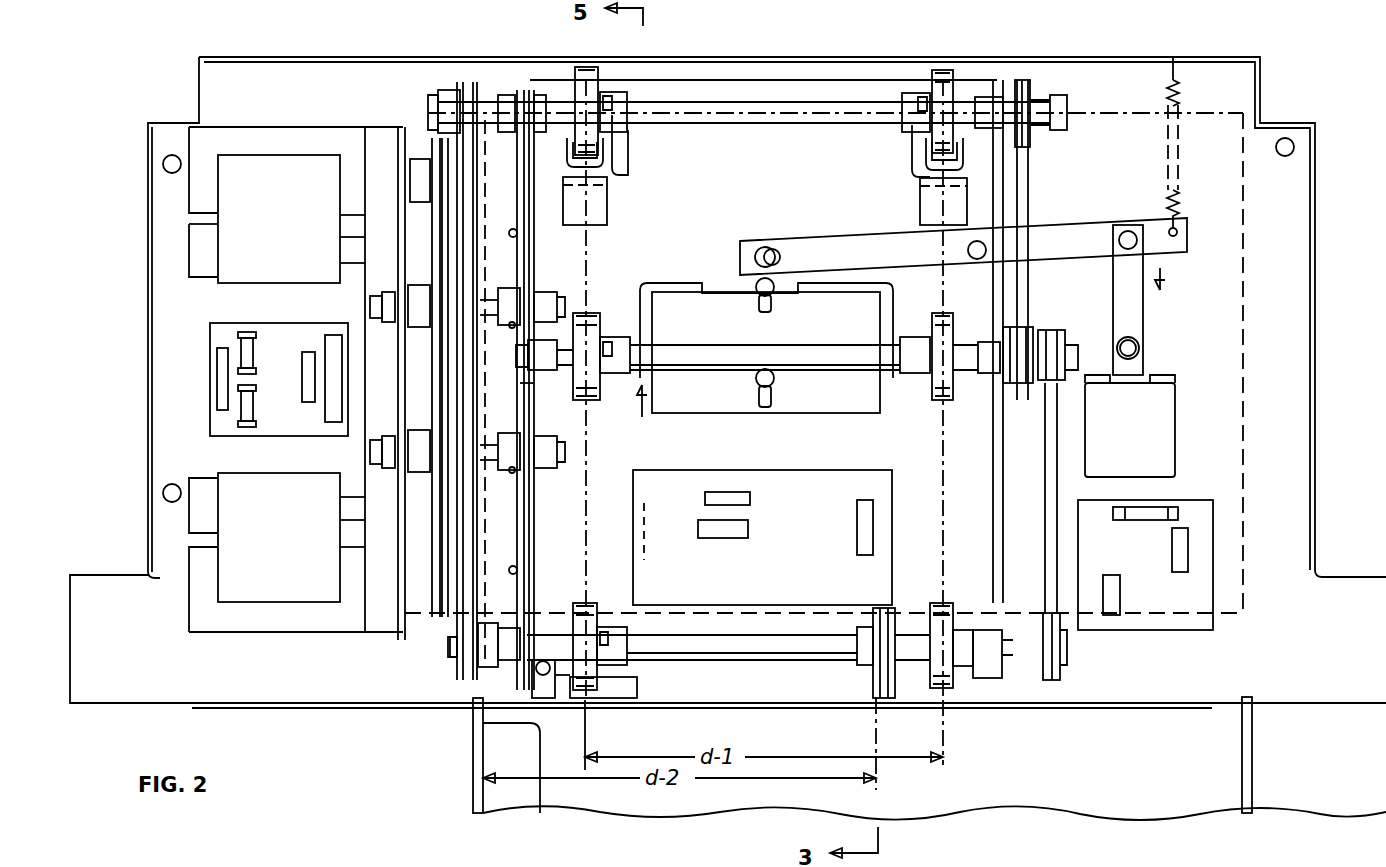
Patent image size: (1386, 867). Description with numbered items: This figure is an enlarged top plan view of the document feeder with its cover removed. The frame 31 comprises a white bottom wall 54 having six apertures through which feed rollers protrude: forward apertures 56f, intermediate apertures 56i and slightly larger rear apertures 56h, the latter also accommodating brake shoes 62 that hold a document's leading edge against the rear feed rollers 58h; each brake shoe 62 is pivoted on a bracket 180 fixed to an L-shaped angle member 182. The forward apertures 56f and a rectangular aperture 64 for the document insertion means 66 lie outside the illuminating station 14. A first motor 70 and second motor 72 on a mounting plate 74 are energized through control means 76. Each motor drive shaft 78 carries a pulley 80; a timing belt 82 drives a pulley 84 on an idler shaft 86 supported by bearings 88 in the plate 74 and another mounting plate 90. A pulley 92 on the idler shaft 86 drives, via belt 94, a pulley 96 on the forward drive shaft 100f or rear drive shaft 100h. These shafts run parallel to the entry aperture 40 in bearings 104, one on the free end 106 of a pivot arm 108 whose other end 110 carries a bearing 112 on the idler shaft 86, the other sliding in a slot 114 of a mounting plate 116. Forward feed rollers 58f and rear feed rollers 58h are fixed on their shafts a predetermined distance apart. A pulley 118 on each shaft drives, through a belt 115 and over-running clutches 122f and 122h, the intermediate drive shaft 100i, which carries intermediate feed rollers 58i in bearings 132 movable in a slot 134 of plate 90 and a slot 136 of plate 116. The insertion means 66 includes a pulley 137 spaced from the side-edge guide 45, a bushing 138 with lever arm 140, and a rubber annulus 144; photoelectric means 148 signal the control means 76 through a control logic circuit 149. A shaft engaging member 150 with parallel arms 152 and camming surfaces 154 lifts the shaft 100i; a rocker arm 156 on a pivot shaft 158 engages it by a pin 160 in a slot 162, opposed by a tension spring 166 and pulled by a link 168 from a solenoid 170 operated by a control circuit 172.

The illuminating station 14 is at (684, 108).
The frame 31 is at (196, 86).
The entry aperture 40 is at (778, 715).
The document side-edge guide 45 is at (473, 745).
The bottom wall 54 is at (322, 97).
The rear aperture 56h is at (604, 75).
The intermediate aperture 56i is at (604, 337).
The forward aperture 56f is at (955, 340).
The rear feed roller 58h is at (590, 66).
The intermediate feed roller 58i is at (588, 312).
The forward feed roller 58f is at (587, 603).
The brake shoe 62 is at (622, 148).
The rectangularly-shaped aperture 64 is at (873, 612).
The document insertion means 66 is at (886, 608).
The first motor 70 is at (272, 473).
The second motor 72 is at (262, 284).
The mounting plate 74 is at (396, 385).
The control means 76 is at (210, 428).
The drive shaft 78 is at (410, 172).
The pulley 80 is at (430, 212).
The endless timing belt 82 is at (430, 236).
The pulley 84 is at (440, 282).
The idler shaft 86 is at (498, 300).
The bearing 88 is at (525, 292).
The mounting plate 90 is at (540, 425).
The additional pulley 92 is at (484, 358).
The endless timing belt 94 is at (470, 208).
The pulley 96 is at (478, 140).
The rear drive shaft 100h is at (768, 100).
The intermediate roller drive shaft 100i is at (772, 352).
The forward drive shaft 100f is at (700, 636).
The bearing 104 is at (495, 95).
The free end 106 is at (510, 95).
The pivot arm 108 is at (518, 240).
The other end 110 is at (520, 410).
The bearing 112 is at (512, 328).
The slot 114 is at (1020, 88).
The belt 115 is at (1030, 190).
The mounting plate 116 is at (993, 512).
The pulley 118 is at (1032, 138).
The over-running clutch 122h is at (1018, 385).
The over-running clutch 122f is at (1052, 330).
The bearing 132 is at (545, 375).
The slot 134 is at (540, 340).
The slot 136 is at (992, 378).
The additional pulley 137 is at (900, 622).
The bushing 138 is at (858, 662).
The lever arm 140 is at (886, 698).
The annulus 144 is at (858, 630).
The photoelectric means 148 is at (548, 695).
The control logic circuit 149 is at (872, 470).
The shaft engaging member 150 is at (732, 287).
The arm 152 is at (640, 290).
The ramp-like camming surface 154 is at (886, 378).
The rocker arm 156 is at (815, 243).
The pivot shaft 158 is at (968, 250).
The pin 160 is at (760, 296).
The slot 162 is at (768, 248).
The tension spring 166 is at (1180, 170).
The link 168 is at (1143, 318).
The solenoid 170 is at (1178, 400).
The control circuit 172 is at (1190, 500).
The bracket 180 is at (608, 172).
The L-shaped angle member 182 is at (608, 192).